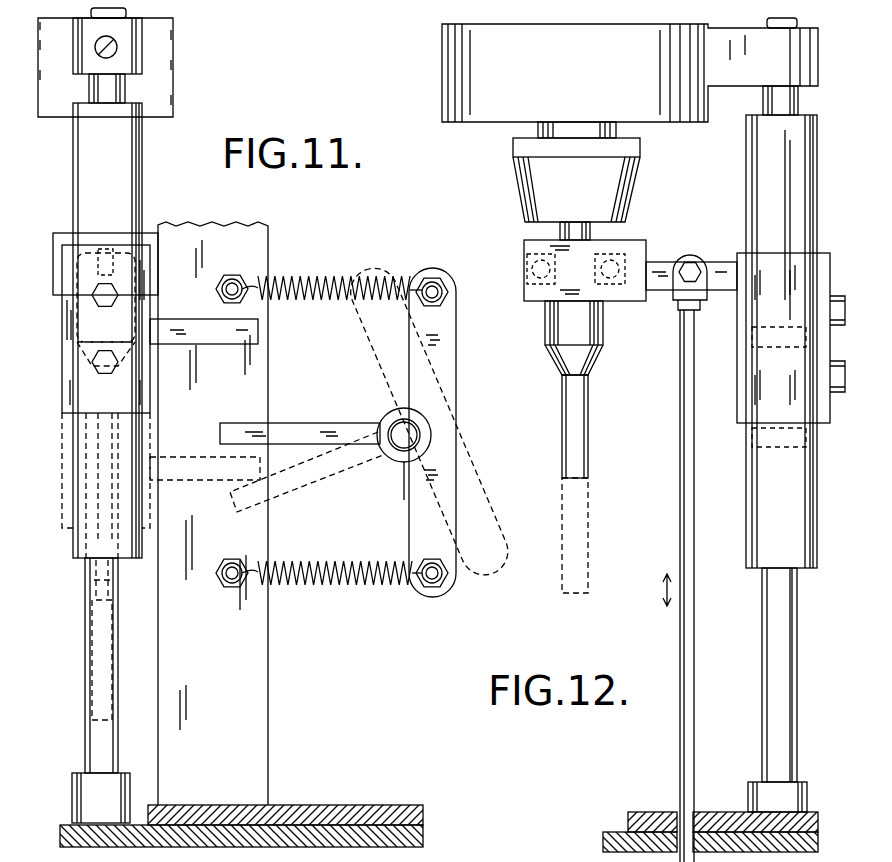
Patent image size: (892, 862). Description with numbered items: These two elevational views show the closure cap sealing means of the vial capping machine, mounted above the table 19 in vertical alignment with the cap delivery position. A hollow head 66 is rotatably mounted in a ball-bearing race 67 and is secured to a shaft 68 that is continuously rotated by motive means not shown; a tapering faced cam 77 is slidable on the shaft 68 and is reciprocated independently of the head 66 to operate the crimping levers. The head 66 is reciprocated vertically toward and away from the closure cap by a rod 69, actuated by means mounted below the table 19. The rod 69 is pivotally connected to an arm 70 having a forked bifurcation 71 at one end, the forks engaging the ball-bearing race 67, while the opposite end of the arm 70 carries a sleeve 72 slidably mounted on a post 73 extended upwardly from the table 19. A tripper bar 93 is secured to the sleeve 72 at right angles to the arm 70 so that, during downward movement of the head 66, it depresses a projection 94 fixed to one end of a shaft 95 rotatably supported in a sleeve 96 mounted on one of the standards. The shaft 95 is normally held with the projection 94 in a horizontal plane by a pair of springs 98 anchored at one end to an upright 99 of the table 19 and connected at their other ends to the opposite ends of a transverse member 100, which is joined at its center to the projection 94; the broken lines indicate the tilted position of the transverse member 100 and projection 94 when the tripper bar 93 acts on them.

In FIG. 11, the table 19 is at (420, 840).
In FIG. 12, the table 19 is at (607, 838).
In FIG. 12, the hollow head 66 is at (598, 361).
In FIG. 12, the ball-bearing race 67 is at (527, 270).
In FIG. 12, the shaft 68 is at (583, 233).
In FIG. 12, the rod 69 is at (683, 646).
In FIG. 12, the arm 70 is at (717, 264).
In FIG. 12, the forked bifurcation 71 is at (634, 302).
In FIG. 11, the sleeve 72 is at (66, 345).
In FIG. 12, the sleeve 72 is at (812, 283).
In FIG. 11, the post 73 is at (96, 753).
In FIG. 12, the post 73 is at (776, 668).
In FIG. 12, the tapering faced cam 77 is at (531, 198).
In FIG. 11, the tripper bar 93 is at (258, 331).
In FIG. 11, the projection 94 is at (317, 432).
In FIG. 11, the shaft 95 is at (412, 437).
In FIG. 11, the sleeve 96 is at (395, 462).
In FIG. 11, the springs 98 is at (316, 278).
In FIG. 11, the upright 99 is at (258, 693).
In FIG. 11, the transverse member 100 is at (452, 360).